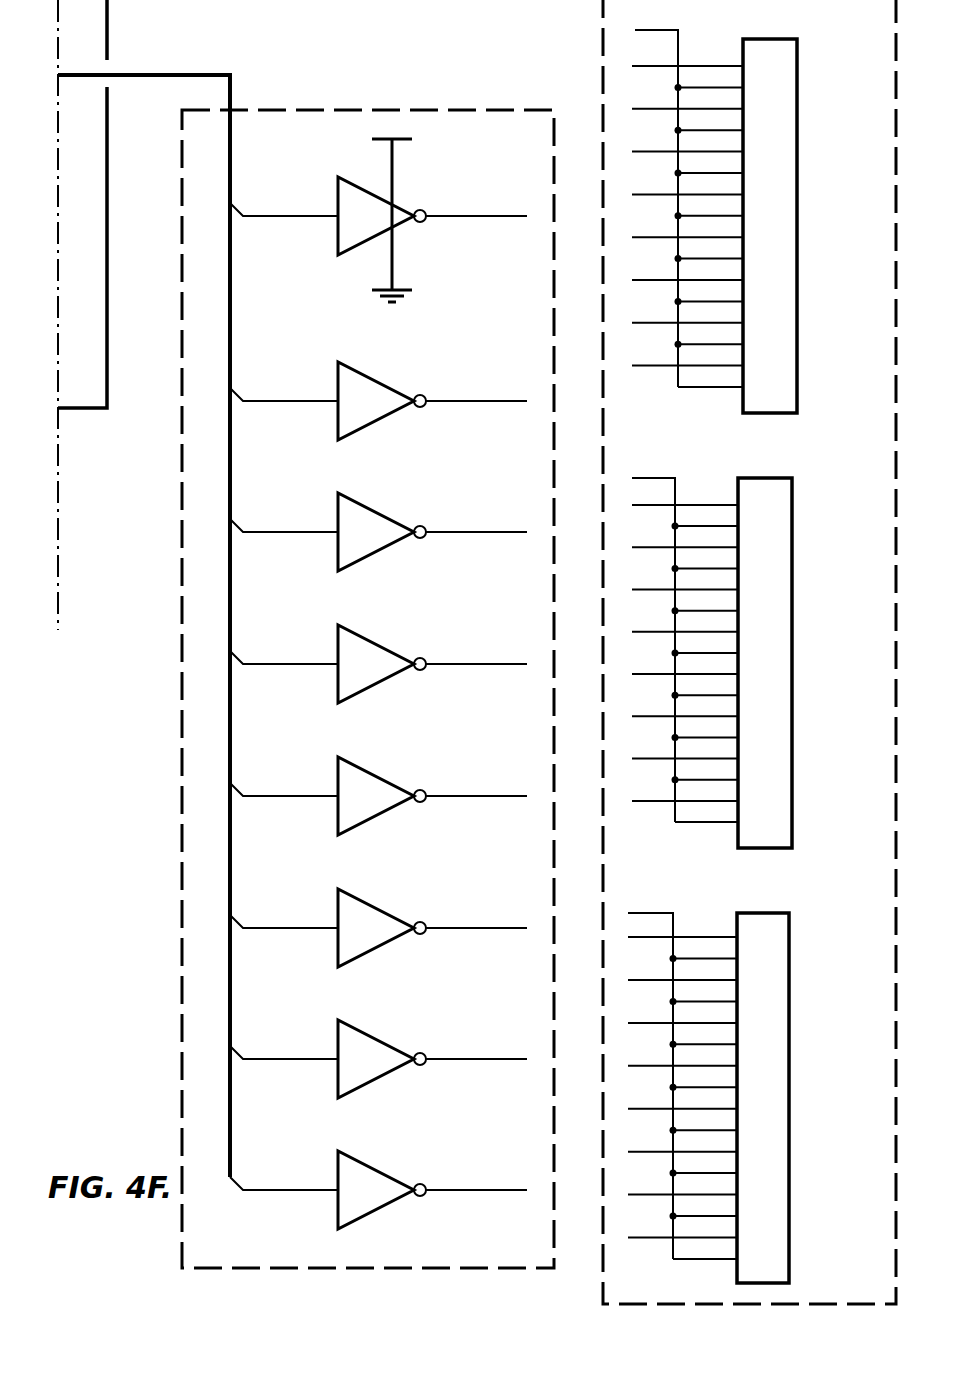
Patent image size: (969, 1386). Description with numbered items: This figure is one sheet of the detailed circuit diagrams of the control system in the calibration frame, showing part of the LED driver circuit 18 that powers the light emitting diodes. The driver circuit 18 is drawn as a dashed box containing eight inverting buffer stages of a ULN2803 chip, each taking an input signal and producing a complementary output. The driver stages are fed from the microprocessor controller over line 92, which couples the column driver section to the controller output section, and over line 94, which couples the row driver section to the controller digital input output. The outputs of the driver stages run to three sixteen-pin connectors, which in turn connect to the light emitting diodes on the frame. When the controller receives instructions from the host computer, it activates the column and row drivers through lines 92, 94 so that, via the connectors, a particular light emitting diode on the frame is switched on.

The LED driver circuit 18 is at (472, 82).
The line 92 is at (107, 354).
The line 94 is at (230, 474).